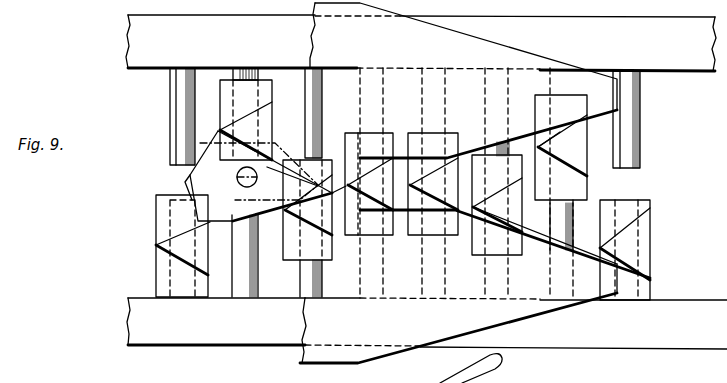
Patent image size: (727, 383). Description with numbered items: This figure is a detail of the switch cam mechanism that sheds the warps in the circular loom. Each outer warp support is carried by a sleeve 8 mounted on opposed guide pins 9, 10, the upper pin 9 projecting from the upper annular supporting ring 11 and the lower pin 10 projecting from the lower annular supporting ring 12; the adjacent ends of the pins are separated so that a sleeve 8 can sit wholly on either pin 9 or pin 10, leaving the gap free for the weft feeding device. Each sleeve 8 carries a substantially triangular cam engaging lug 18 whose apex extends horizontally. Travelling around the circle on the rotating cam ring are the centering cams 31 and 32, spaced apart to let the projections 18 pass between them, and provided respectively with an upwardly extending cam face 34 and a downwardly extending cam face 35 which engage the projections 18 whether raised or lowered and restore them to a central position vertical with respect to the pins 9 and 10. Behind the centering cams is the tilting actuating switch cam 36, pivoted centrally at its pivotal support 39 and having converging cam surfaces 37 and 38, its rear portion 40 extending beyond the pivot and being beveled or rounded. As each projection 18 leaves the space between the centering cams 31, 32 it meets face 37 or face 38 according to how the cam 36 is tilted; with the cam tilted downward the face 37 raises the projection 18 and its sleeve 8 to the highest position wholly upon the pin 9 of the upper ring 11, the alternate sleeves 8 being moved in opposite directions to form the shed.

The sleeve 8 is at (163, 277).
The guide pin 9 is at (178, 103).
The guide pin 10 is at (247, 275).
The upper annular supporting ring 11 is at (147, 42).
The lower annular supporting ring 12 is at (193, 333).
The cam engaging lug 18 is at (262, 122).
The centering cam 31 is at (602, 97).
The centering cam 32 is at (587, 280).
The cam face 34 is at (565, 128).
The cam face 35 is at (582, 250).
The tilting actuating switch cam 36 is at (268, 176).
The cam surface 37 is at (272, 170).
The cam surface 38 is at (268, 212).
The pivotal support 39 is at (218, 130).
The beveled rear portion 40 is at (185, 182).